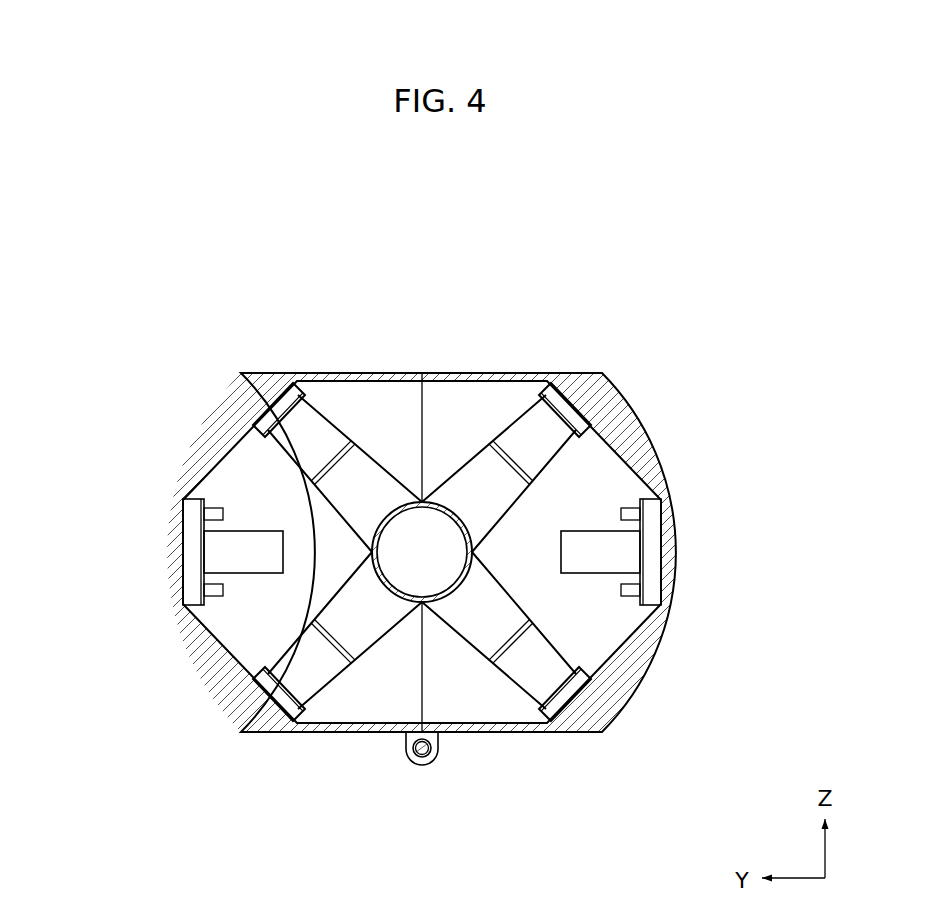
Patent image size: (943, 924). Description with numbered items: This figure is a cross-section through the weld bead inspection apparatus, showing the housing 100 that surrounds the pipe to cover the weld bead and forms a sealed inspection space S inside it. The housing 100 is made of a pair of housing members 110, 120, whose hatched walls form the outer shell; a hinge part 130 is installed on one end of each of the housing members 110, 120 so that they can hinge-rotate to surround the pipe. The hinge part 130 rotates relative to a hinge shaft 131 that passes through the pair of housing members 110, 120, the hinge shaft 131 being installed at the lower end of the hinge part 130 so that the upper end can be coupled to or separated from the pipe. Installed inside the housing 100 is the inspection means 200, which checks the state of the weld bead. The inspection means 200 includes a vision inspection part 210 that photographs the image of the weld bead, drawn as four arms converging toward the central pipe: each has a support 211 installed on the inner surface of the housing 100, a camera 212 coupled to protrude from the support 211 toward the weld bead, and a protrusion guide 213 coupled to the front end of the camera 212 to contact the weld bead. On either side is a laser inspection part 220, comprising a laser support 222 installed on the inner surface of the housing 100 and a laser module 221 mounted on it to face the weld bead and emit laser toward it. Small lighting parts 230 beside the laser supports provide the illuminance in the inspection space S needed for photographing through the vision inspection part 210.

The housing 100 is at (471, 486).
The housing member 110 is at (263, 373).
The housing member 120 is at (549, 474).
The hinge part 130 is at (466, 801).
The hinge shaft 131 is at (430, 752).
The inspection means 200 is at (454, 559).
The vision inspection part 210 is at (528, 585).
The support 211 is at (570, 693).
The camera 212 is at (542, 662).
The protrusion guide 213 is at (497, 615).
The laser inspection part 220 is at (486, 626).
The laser module 221 is at (653, 567).
The laser support 222 is at (615, 553).
The lighting part 230 is at (212, 502).
The inspection space S is at (257, 490).